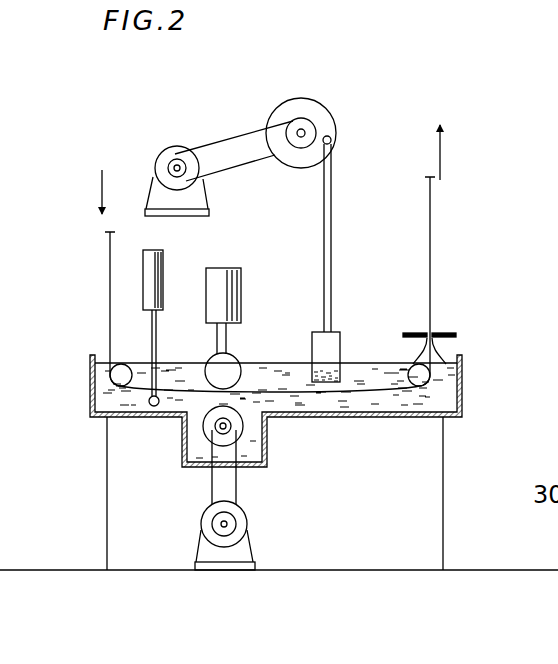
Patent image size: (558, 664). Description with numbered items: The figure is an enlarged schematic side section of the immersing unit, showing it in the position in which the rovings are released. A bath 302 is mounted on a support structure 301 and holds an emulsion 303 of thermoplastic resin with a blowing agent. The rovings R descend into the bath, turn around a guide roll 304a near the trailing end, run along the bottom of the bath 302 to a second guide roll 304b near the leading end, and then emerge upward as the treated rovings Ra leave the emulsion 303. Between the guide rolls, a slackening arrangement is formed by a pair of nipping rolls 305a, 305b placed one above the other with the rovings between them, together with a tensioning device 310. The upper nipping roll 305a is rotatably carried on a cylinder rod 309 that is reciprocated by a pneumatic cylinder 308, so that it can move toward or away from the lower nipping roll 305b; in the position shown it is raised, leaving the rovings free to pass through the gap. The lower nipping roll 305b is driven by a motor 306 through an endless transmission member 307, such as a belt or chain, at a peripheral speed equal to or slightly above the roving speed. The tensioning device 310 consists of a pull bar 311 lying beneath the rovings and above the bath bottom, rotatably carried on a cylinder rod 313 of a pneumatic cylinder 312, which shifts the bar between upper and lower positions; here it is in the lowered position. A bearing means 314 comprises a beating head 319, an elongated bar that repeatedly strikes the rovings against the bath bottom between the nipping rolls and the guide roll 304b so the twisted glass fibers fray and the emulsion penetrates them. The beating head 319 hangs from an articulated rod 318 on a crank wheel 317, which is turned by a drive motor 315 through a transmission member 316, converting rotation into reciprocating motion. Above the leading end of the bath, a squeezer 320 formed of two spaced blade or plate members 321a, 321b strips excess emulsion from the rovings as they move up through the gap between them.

The support structure 301 is at (322, 560).
The bath 302 is at (358, 417).
The emulsion 303 is at (425, 393).
The guide roll 304a is at (112, 377).
The guide roll 304b is at (418, 378).
The nipping roll 305a is at (232, 363).
The nipping roll 305b is at (245, 428).
The motor 306 is at (205, 552).
The transmission member 307 is at (213, 488).
The pneumatic cylinder 308 is at (223, 287).
The cylinder rod 309 is at (225, 340).
The tensioning device 310 is at (138, 303).
The pull bar 311 is at (148, 406).
The pneumatic cylinder 312 is at (143, 263).
The cylinder rod 313 is at (152, 343).
The bearing means 314 is at (265, 130).
The drive motor 315 is at (162, 198).
The transmission member 316 is at (223, 143).
The crank wheel 317 is at (295, 97).
The articulated rod 318 is at (323, 203).
The beating head 319 is at (337, 331).
The squeezer 320 is at (445, 309).
The blade or plate member 321a is at (453, 333).
The blade or plate member 321b is at (410, 332).
The rovings R is at (110, 308).
The treated web Ra is at (430, 205).